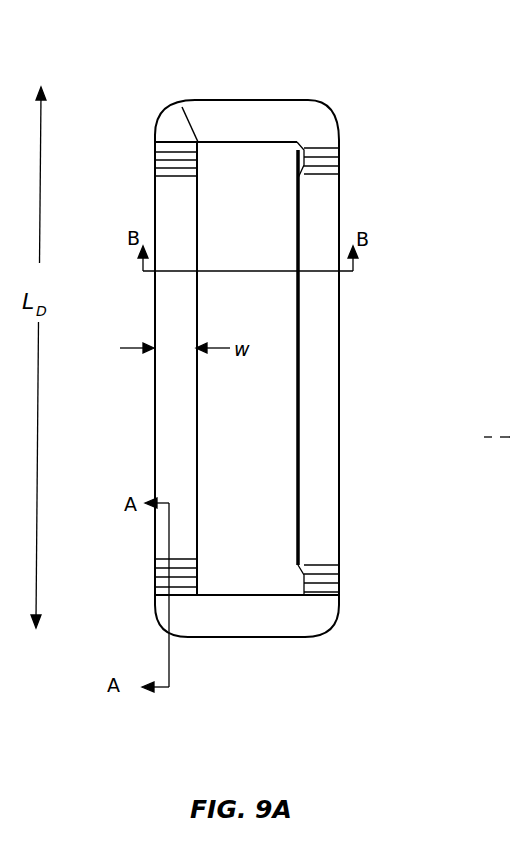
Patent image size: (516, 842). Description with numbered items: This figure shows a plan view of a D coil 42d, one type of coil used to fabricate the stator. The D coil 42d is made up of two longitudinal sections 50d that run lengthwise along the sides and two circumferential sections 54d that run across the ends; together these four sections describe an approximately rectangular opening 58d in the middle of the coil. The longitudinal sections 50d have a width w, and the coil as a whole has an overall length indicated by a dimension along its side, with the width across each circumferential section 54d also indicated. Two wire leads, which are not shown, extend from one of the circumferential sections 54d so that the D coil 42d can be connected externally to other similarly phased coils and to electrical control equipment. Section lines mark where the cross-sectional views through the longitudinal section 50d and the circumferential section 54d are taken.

The D coil 42d is at (420, 271).
The longitudinal sections 50d is at (132, 183).
The circumferential sections 54d is at (345, 82).
The rectangular opening 58d is at (253, 444).